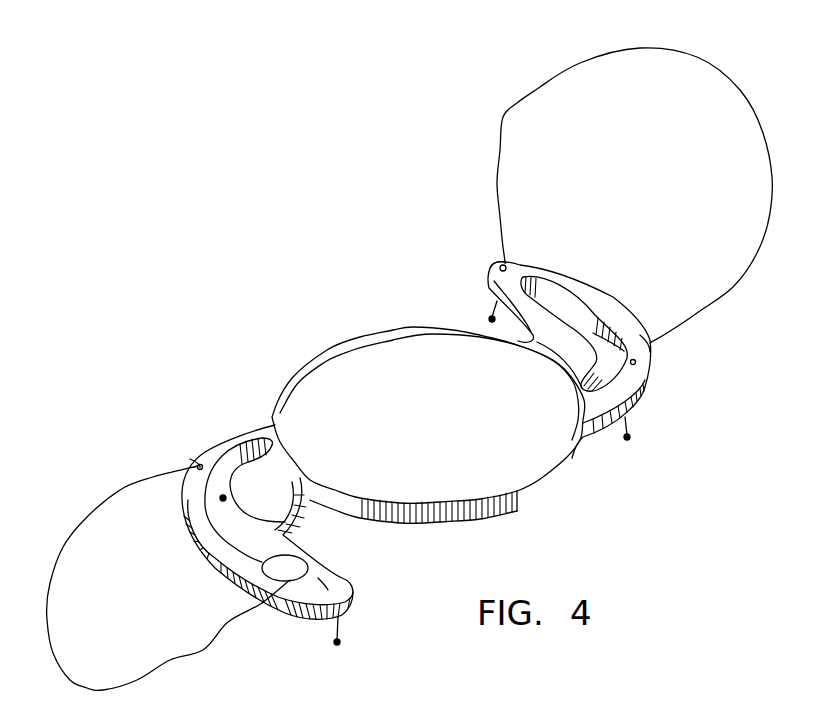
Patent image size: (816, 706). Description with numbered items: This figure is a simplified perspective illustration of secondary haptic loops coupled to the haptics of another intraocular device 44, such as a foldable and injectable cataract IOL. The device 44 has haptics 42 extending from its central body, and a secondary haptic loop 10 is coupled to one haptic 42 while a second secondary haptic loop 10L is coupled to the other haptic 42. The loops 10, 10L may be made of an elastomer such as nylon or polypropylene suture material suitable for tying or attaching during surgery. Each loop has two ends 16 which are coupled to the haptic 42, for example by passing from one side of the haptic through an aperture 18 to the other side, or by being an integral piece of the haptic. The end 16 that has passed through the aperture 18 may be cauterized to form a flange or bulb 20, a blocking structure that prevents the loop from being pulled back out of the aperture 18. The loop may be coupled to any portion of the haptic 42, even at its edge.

The secondary haptic loop 10 is at (68, 538).
The secondary haptic loop 10L is at (690, 56).
The loop end 16 is at (198, 464).
The aperture 18 is at (200, 469).
The flange or bulb 20 is at (221, 501).
The haptic 42 is at (223, 437).
The intraocular device 44 is at (421, 392).